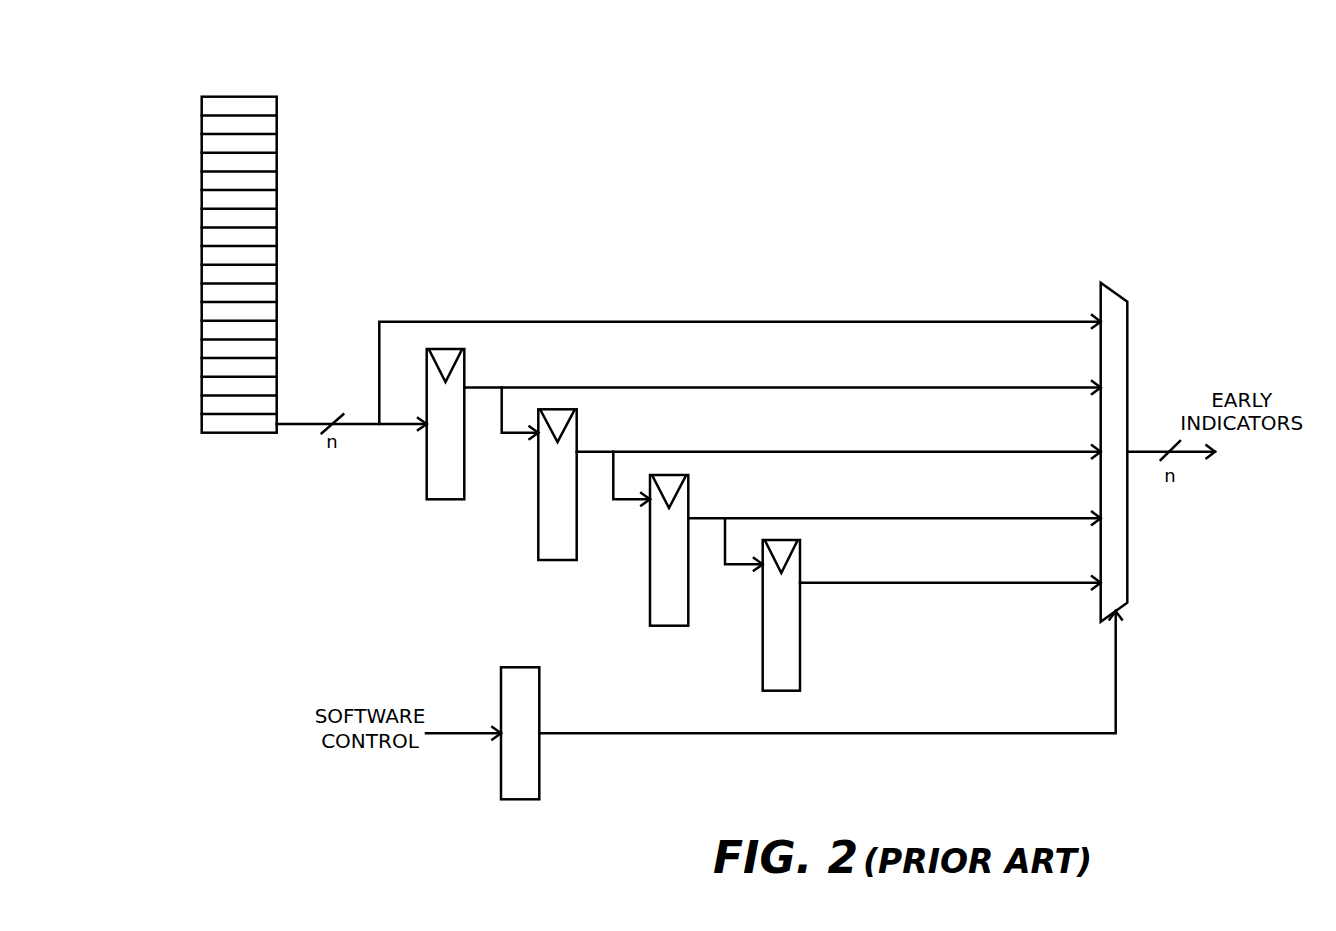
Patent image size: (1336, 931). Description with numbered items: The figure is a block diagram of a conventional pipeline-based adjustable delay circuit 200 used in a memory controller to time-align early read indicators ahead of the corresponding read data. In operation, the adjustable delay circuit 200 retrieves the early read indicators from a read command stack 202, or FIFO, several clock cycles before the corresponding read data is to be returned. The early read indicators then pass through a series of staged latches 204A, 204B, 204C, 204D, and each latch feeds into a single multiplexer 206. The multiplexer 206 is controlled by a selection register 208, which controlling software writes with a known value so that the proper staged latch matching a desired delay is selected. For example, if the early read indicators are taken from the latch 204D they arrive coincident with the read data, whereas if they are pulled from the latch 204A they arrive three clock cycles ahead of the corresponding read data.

The adjustable delay circuit 200 is at (846, 172).
The read command stack 202 is at (257, 97).
The staged latch 204A is at (425, 462).
The staged latch 204B is at (538, 525).
The staged latch 204C is at (650, 593).
The staged latch 204D is at (763, 658).
The multiplexer 206 is at (1120, 293).
The selection register 208 is at (520, 667).